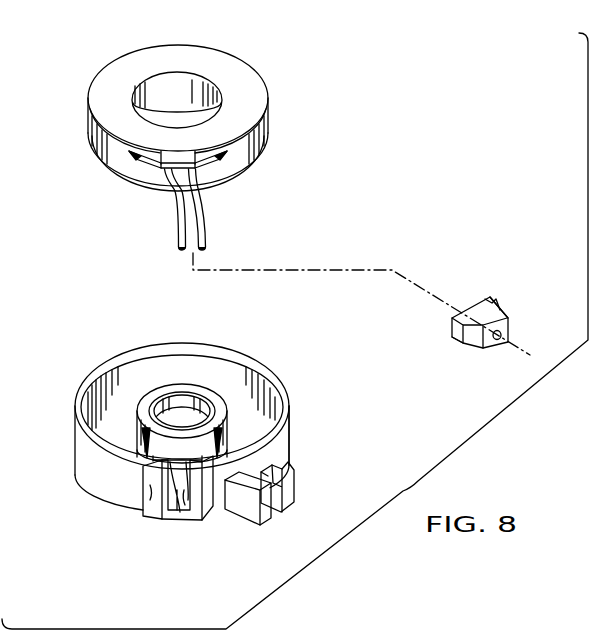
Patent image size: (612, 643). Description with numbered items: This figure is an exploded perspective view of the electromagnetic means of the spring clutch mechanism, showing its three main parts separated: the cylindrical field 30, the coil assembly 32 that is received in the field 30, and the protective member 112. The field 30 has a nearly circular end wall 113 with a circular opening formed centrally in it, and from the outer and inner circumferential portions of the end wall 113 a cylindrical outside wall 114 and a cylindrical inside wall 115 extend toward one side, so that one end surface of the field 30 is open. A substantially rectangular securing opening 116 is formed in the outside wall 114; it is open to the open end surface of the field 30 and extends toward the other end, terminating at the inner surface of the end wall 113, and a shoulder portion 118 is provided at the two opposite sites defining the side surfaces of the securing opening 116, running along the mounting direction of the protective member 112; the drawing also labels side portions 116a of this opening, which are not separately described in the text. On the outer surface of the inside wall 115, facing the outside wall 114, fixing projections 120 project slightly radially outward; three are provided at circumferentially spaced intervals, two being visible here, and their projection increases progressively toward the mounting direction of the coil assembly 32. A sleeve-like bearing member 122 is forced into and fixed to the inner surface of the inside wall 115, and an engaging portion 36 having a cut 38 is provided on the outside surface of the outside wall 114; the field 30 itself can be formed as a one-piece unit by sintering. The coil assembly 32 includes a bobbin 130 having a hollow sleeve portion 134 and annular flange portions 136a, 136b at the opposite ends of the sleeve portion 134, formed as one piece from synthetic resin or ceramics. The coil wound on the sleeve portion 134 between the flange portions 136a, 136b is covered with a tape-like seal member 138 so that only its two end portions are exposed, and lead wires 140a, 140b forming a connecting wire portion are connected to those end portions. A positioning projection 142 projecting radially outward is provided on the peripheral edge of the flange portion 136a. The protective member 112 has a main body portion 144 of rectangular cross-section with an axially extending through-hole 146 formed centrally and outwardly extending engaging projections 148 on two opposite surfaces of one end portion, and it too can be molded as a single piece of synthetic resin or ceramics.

The bobbin 130 is at (207, 147).
The hollow sleeve portion 134 is at (157, 87).
The annular flange portion 136a is at (240, 73).
The annular flange portion 136b is at (130, 188).
The coil assembly 32 is at (272, 160).
The tape-like seal member 138 is at (241, 162).
The positioning projection 142 is at (164, 160).
The lead wire 140a is at (177, 236).
The lead wire 140b is at (206, 237).
The protective member 112 is at (472, 331).
The main body portion 144 is at (500, 315).
The through-hole 146 is at (503, 337).
The engaging projections 148 is at (498, 307).
The field 30 is at (186, 468).
The end wall 113 is at (110, 435).
The outside wall 114 is at (291, 437).
The inside wall 115 is at (148, 456).
The securing opening 116 is at (170, 529).
The terminal block posts 116a is at (153, 493).
The shoulder portion 118 is at (165, 495).
The fixing projection 120 is at (224, 440).
The bearing member 122 is at (210, 399).
The engaging portion 36 is at (245, 515).
The cut 38 is at (276, 485).